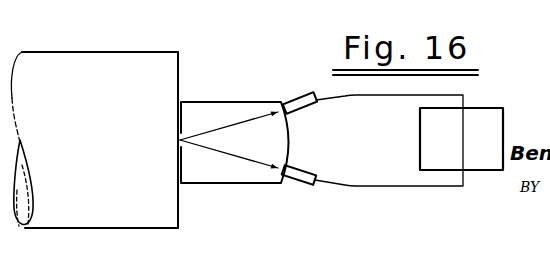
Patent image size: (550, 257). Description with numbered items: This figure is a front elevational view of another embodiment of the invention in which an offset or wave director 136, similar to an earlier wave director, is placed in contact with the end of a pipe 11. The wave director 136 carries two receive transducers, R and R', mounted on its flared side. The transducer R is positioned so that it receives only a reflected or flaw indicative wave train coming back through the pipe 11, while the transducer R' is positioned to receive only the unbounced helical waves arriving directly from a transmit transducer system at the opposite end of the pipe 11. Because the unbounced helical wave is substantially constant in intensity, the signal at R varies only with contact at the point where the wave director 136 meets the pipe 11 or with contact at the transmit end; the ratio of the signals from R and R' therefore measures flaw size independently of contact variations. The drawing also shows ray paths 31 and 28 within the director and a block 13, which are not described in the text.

The pipe 11 is at (65, 52).
The wave director 136 is at (225, 101).
The upper light ray 31 is at (243, 128).
The lower light ray 28 is at (232, 158).
The receive transducer R' is at (300, 85).
The receive transducer R is at (313, 161).
The detector box 13 is at (500, 124).